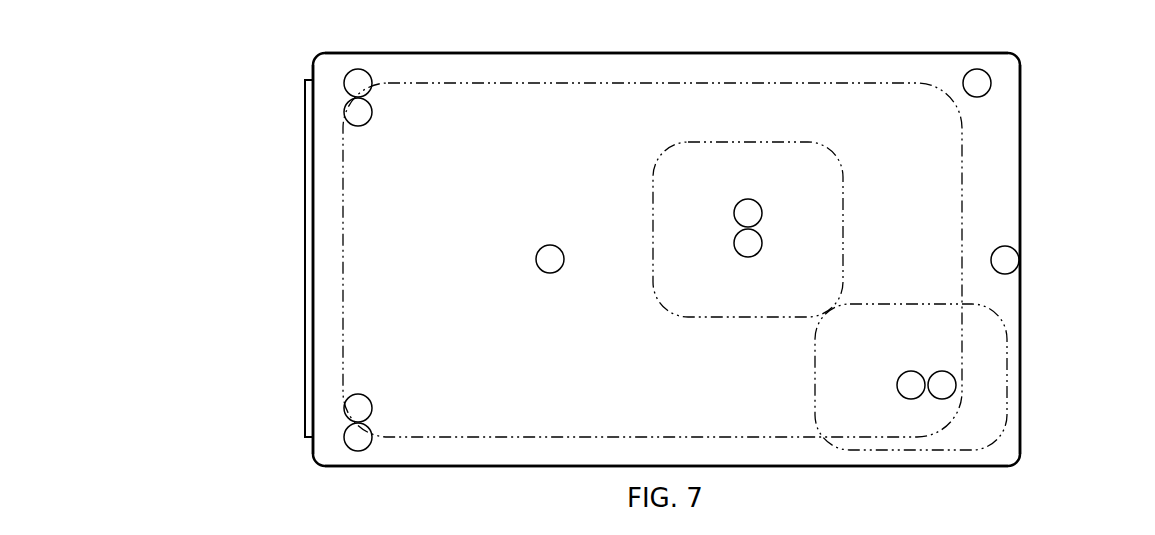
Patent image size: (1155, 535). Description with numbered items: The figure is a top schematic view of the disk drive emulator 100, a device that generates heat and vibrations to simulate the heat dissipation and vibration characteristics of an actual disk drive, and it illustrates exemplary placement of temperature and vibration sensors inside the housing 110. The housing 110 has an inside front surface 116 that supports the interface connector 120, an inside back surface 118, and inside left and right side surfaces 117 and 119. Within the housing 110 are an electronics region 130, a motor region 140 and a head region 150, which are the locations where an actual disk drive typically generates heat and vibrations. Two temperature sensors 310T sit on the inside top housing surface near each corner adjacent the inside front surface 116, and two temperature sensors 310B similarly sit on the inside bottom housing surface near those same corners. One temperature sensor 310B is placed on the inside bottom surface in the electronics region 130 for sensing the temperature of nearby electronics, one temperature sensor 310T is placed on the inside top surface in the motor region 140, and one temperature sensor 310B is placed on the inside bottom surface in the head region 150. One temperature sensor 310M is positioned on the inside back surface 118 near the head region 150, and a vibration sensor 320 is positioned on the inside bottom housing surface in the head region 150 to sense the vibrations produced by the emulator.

The disk drive emulator 100 is at (277, 50).
The housing 110 is at (1021, 170).
The inside front surface 116 is at (322, 242).
The inside left side surface 117 is at (525, 62).
The inside back surface 118 is at (1012, 147).
The inside right side surface 119 is at (625, 457).
The interface connector 120 is at (305, 253).
The electronics region 130 is at (566, 83).
The motor region 140 is at (843, 222).
The head region 150 is at (1007, 374).
The temperature sensor on inside top housing surface 310T is at (358, 69).
The temperature sensor on inside bottom housing surface 310B is at (358, 126).
The temperature sensor on inside back side housing surface 310M is at (1019, 260).
The vibration sensor 320 is at (947, 399).